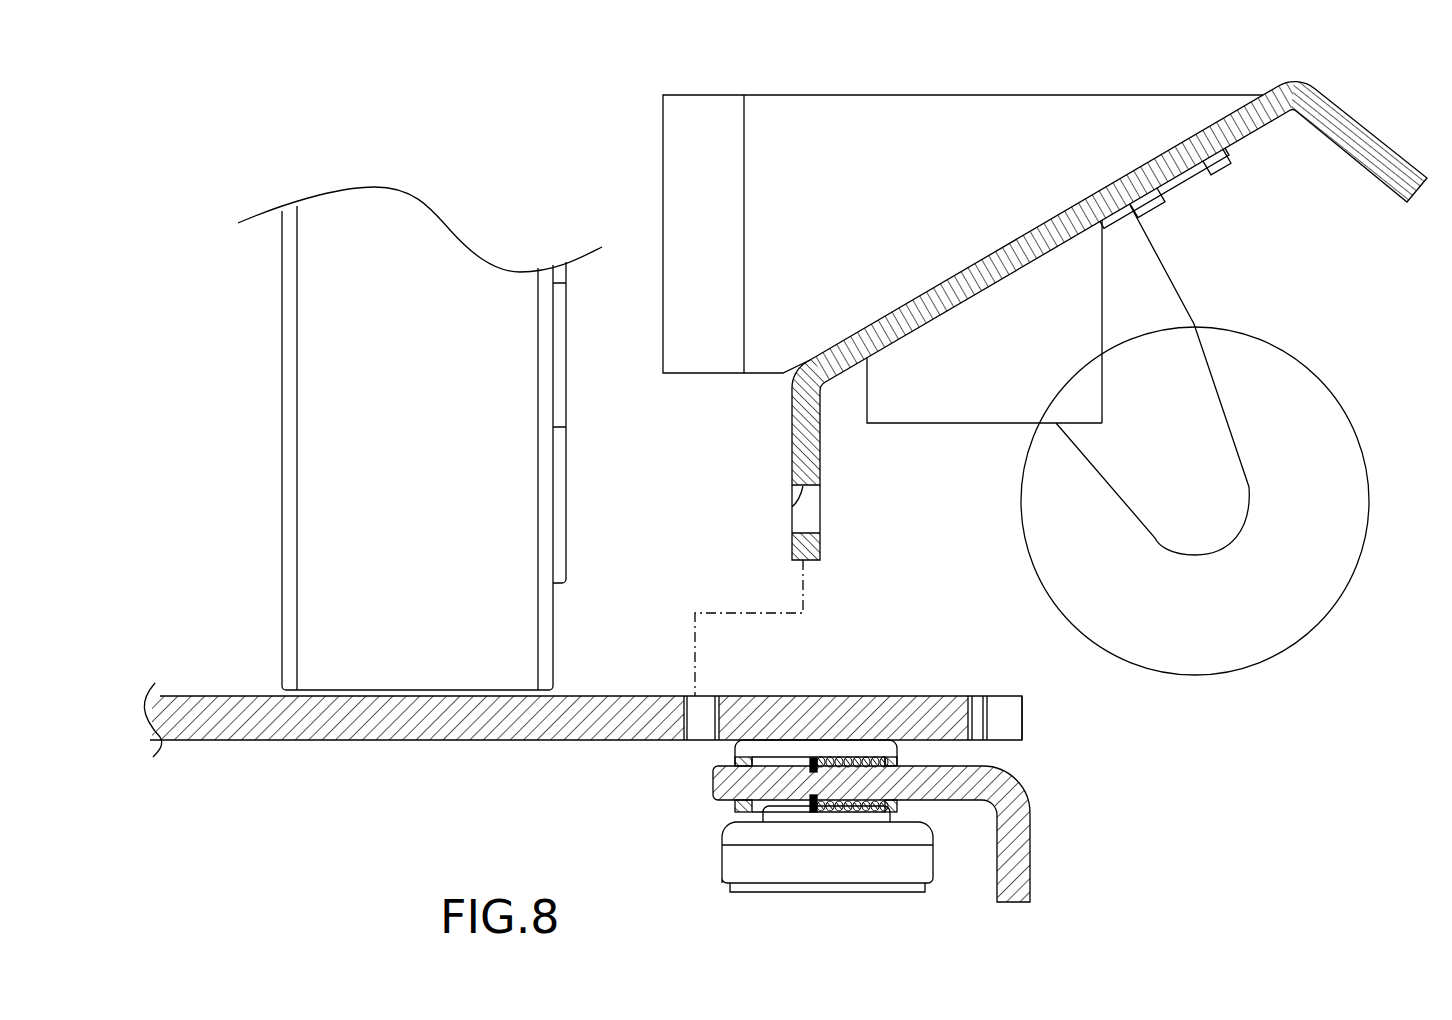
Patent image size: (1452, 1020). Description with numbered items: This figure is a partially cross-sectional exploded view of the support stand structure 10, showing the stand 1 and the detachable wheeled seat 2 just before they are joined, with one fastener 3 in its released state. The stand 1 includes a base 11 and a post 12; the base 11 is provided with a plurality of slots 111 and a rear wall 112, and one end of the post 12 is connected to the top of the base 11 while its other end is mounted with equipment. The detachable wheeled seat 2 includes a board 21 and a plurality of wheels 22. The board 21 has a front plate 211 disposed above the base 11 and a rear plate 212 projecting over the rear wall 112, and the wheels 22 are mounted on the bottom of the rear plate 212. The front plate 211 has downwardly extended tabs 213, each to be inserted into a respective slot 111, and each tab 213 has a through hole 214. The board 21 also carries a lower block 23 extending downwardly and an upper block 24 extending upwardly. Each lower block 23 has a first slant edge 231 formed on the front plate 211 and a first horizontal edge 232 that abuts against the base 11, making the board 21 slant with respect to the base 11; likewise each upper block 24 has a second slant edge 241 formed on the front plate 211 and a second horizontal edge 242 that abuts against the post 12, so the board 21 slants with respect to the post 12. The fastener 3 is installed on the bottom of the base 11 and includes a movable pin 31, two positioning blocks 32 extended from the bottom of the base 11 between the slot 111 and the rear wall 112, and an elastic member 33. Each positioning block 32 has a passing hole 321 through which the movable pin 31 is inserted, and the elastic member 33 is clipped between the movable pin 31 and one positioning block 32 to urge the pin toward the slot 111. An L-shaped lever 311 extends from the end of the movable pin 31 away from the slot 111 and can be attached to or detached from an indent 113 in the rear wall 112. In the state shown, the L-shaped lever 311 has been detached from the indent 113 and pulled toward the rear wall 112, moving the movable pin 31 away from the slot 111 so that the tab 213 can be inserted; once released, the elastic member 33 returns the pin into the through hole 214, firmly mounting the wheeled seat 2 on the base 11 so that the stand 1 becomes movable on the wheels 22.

The support stand structure 10 is at (622, 42).
The stand 1 is at (278, 357).
The base 11 is at (392, 727).
The slot 111 is at (690, 712).
The rear wall 112 is at (1025, 718).
The indent 113 is at (978, 715).
The post 12 is at (335, 480).
The detachable wheeled seat 2 is at (1175, 86).
The board 21 is at (1101, 189).
The front plate 211 is at (904, 322).
The rear plate 212 is at (1195, 164).
The tab 213 is at (802, 447).
The through hole 214 is at (792, 507).
The wheel 22 is at (1306, 360).
The lower block 23 is at (942, 407).
The first slant edge 231 is at (1088, 227).
The first horizontal edge 232 is at (982, 427).
The upper block 24 is at (908, 120).
The second slant edge 241 is at (1048, 217).
The second horizontal edge 242 is at (662, 148).
The fastener 3 is at (1047, 794).
The movable pin 31 is at (935, 766).
The L-shaped lever 311 is at (1022, 855).
The passing hole 321 is at (735, 787).
The positioning block 32 is at (742, 755).
The elastic member 33 is at (850, 757).